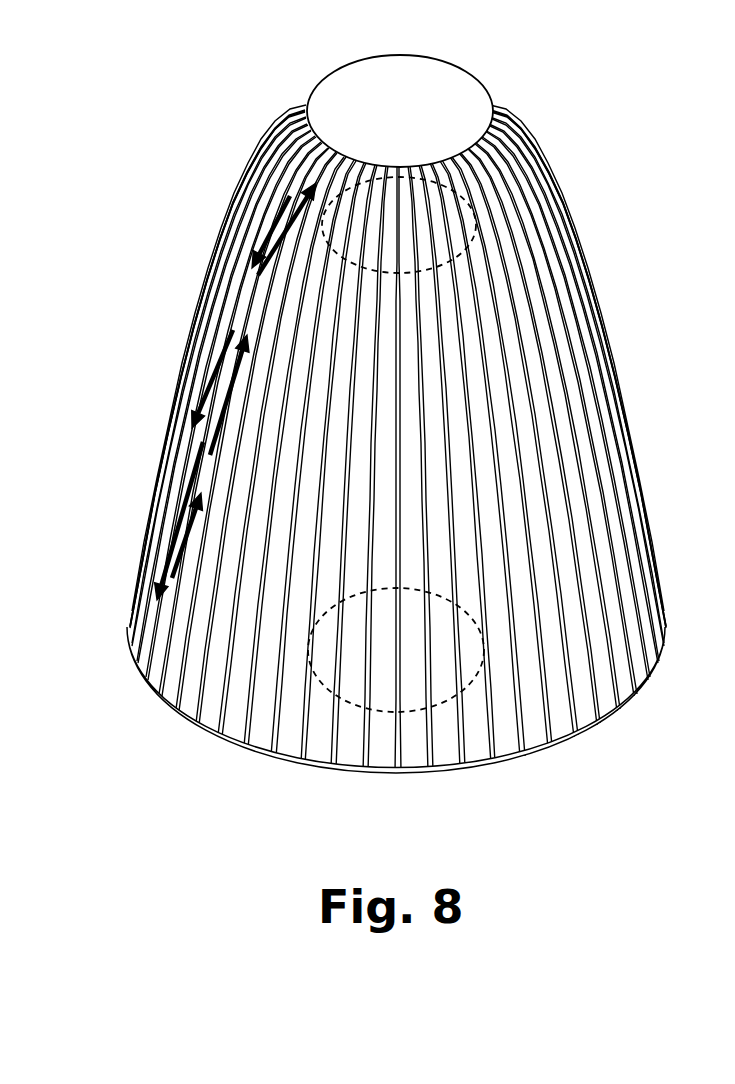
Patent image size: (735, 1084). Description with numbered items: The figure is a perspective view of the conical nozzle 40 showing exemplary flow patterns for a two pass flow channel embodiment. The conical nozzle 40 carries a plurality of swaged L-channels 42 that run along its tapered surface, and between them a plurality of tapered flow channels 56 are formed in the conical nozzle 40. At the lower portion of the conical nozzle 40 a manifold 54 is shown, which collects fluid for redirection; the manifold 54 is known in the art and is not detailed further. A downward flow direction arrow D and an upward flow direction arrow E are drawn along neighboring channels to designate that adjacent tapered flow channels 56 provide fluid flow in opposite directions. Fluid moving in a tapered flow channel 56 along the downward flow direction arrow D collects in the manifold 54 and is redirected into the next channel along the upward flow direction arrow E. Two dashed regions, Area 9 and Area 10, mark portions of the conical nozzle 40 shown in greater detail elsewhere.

The conical nozzle 40 is at (532, 107).
The swaged L-channels 42 is at (513, 281).
The manifold 54 is at (607, 715).
The tapered flow channels 56 is at (237, 690).
The detail area shown in FIG. 9 Area 9 is at (478, 186).
The detail area shown in FIG. 10 Area 10 is at (483, 700).
The downward flow direction arrow D is at (165, 447).
The upward flow direction arrow E is at (250, 333).